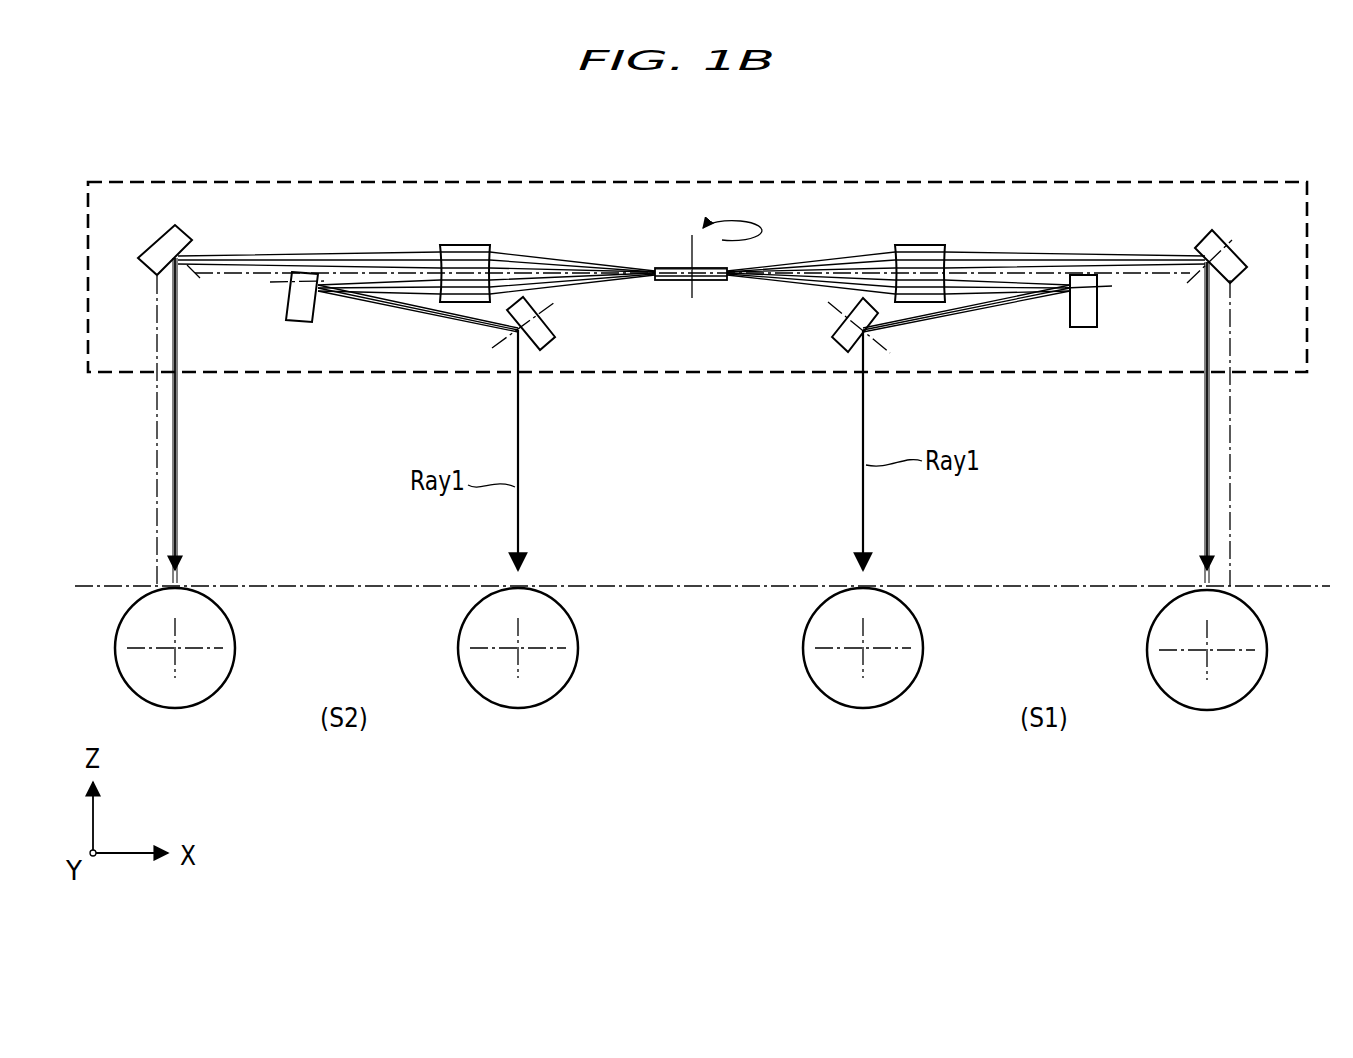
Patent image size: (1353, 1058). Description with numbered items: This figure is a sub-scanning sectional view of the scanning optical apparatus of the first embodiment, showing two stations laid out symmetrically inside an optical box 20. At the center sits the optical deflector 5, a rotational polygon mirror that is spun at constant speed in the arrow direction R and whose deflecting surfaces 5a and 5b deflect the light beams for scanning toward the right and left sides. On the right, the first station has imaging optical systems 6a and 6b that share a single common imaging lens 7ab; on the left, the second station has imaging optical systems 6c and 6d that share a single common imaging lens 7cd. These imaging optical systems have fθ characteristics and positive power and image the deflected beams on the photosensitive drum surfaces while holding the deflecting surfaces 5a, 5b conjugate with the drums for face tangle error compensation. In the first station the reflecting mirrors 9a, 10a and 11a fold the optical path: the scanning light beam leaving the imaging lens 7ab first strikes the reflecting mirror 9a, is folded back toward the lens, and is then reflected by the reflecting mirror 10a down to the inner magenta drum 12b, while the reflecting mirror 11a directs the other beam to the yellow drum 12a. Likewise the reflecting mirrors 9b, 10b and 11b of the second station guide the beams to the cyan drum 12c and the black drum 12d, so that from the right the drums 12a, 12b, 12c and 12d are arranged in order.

The optical box 20 is at (135, 182).
The optical deflector 5 is at (712, 282).
The deflecting surface 5a is at (730, 282).
The deflecting surface 5b is at (652, 280).
The imaging optical system 6a is at (1105, 153).
The imaging optical system 6b is at (898, 302).
The imaging optical system 6c is at (618, 153).
The imaging optical system 6d is at (486, 302).
The imaging lens 7ab is at (942, 246).
The imaging lens 7cd is at (466, 245).
The reflecting mirror 9a is at (1087, 328).
The reflecting mirror 9b is at (292, 305).
The reflecting mirror 10a is at (840, 345).
The reflecting mirror 10b is at (545, 340).
The reflecting mirror 11a is at (1240, 272).
The reflecting mirror 11b is at (212, 216).
The photosensitive drum surface 12a is at (1258, 614).
The photosensitive drum surface 12b is at (912, 612).
The photosensitive drum surface 12c is at (568, 612).
The photosensitive drum surface 12d is at (225, 612).